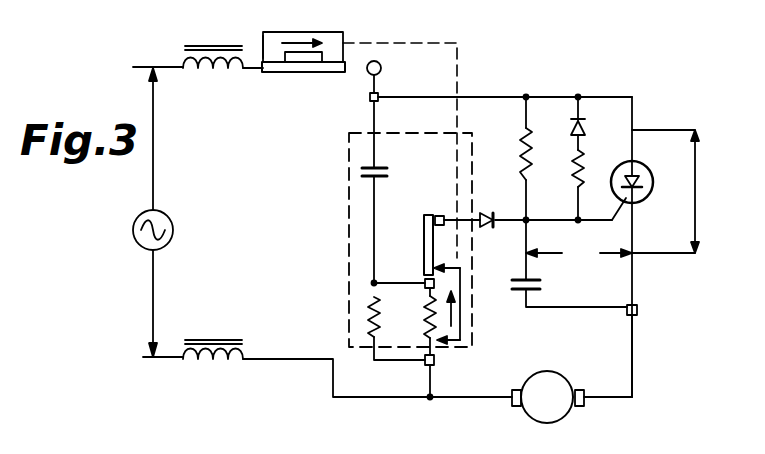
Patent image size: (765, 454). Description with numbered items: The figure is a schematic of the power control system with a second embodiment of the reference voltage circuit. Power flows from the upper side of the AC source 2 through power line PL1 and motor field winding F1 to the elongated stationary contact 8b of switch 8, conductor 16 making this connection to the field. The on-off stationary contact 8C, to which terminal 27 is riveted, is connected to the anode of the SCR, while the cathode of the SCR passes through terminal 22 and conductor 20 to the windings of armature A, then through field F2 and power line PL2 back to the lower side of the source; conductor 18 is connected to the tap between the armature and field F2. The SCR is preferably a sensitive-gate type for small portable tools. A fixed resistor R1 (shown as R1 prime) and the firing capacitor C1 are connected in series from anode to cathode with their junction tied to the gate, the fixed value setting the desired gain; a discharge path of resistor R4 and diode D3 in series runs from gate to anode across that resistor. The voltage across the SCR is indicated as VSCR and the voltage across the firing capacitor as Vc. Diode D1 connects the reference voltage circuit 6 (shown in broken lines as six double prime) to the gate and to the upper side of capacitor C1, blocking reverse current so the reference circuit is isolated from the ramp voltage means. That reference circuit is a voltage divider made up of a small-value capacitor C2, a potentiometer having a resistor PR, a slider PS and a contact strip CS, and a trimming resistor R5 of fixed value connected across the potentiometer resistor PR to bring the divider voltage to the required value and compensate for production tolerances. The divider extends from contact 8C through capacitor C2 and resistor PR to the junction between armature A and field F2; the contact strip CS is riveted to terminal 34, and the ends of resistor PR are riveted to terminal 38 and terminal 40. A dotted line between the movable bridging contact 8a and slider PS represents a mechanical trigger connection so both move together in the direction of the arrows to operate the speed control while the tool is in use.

The AC source 2 is at (135, 219).
The power line PL1 is at (142, 62).
The power line PL2 is at (173, 363).
The motor field winding F1 is at (217, 50).
The field winding F2 is at (226, 339).
The insulated conductor 16 is at (248, 74).
The insulated conductor 18 is at (428, 383).
The switch 8 is at (334, 24).
The movable bridging contact 8a is at (267, 36).
The elongated stationary contact 8b is at (297, 74).
The on-off stationary contact 8C is at (368, 74).
The terminal 27 is at (369, 100).
The reference voltage circuit 6 is at (348, 190).
The capacitor C2 is at (389, 173).
The contact strip CS is at (423, 238).
The terminal 34 is at (438, 215).
The terminal 38 is at (424, 280).
The potentiometer resistor PR is at (424, 319).
The slider PS is at (460, 320).
The trimming resistor R5 is at (368, 316).
The terminal 40 is at (434, 362).
The diode D1 is at (498, 199).
The resistor R1 is at (520, 148).
The diode D3 is at (585, 130).
The resistor R4 is at (573, 175).
The silicon controlled rectifier SCR is at (614, 173).
The voltage across the SCR VSCR is at (673, 191).
The voltage across firing capacitor Vc is at (610, 255).
The firing capacitor C1 is at (542, 287).
The terminal 22 is at (639, 313).
The insulated conductor 20 is at (633, 358).
The armature A is at (565, 376).